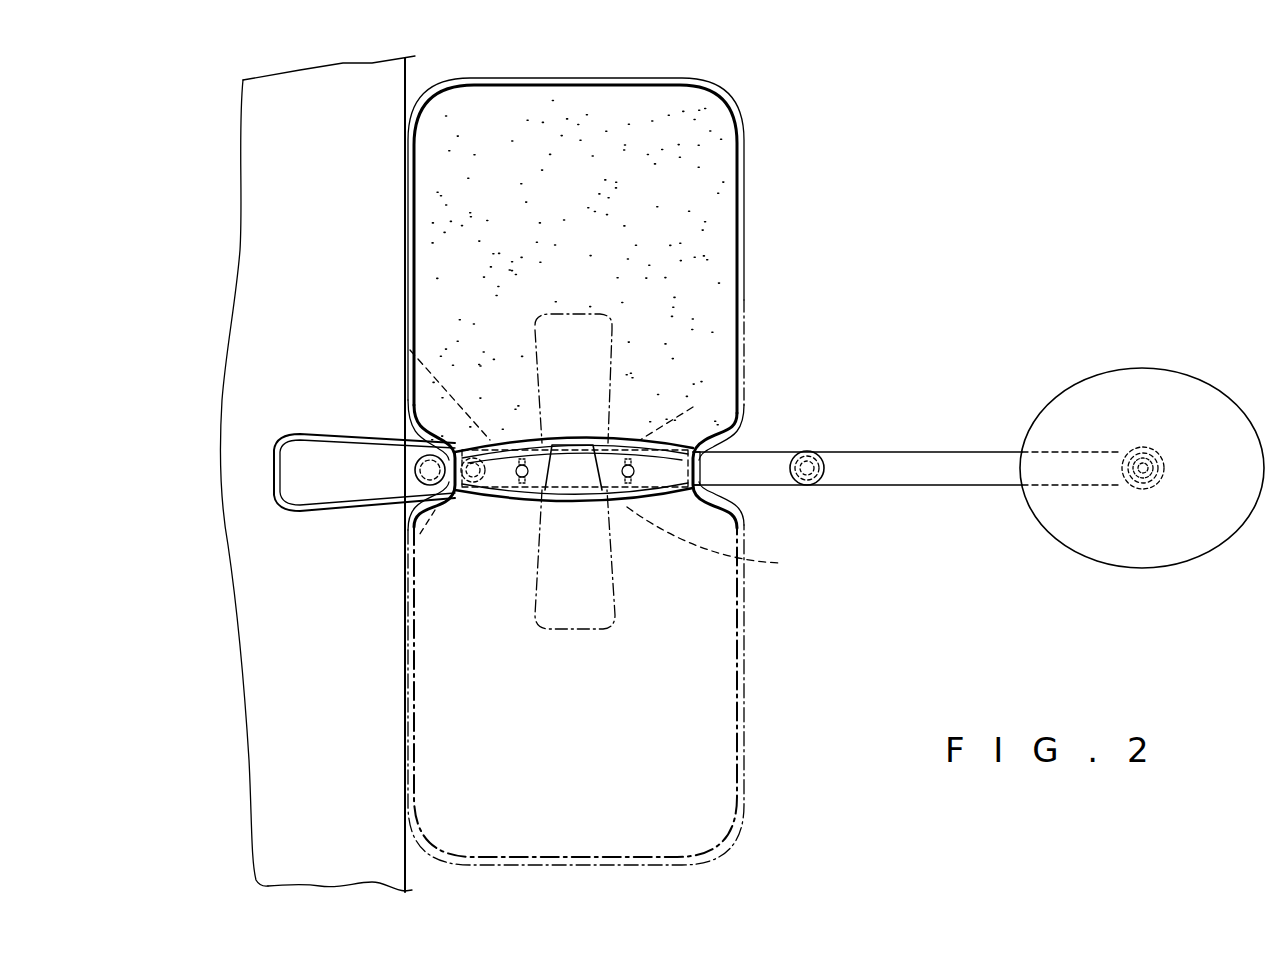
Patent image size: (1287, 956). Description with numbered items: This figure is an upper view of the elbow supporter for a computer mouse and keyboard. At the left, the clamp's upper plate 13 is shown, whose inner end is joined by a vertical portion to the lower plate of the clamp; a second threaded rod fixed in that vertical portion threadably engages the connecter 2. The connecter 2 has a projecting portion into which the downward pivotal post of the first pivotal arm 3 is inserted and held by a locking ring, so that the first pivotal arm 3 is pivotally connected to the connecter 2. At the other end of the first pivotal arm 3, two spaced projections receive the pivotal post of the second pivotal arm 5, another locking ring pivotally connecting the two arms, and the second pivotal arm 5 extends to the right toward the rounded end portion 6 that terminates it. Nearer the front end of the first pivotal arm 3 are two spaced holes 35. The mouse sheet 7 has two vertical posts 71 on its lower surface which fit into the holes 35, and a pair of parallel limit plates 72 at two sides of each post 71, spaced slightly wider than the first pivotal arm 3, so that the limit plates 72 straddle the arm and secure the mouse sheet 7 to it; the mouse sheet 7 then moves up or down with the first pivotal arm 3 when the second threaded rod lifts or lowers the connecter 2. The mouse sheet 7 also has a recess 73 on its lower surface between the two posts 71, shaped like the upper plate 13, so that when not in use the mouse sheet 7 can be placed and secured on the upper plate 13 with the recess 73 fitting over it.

The connecter 2 is at (403, 552).
The first pivotal arm 3 is at (773, 465).
The second pivotal arm 5 is at (930, 455).
The disc 6 is at (1142, 383).
The mouse sheet 7 is at (724, 203).
The upper plate 13 is at (318, 453).
The holes 35 is at (555, 545).
The vertical posts 71 is at (505, 513).
The limit plates 72 is at (402, 338).
The recess 73 is at (605, 352).